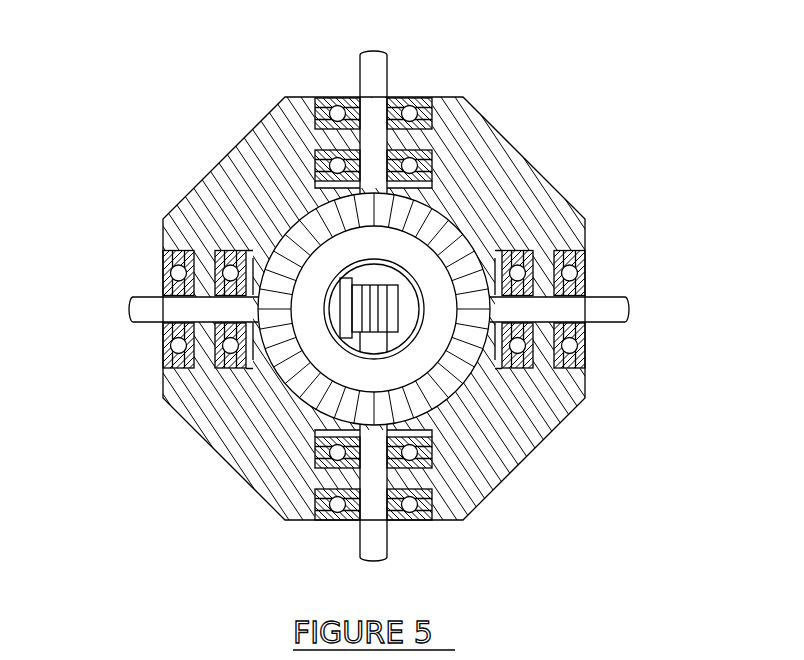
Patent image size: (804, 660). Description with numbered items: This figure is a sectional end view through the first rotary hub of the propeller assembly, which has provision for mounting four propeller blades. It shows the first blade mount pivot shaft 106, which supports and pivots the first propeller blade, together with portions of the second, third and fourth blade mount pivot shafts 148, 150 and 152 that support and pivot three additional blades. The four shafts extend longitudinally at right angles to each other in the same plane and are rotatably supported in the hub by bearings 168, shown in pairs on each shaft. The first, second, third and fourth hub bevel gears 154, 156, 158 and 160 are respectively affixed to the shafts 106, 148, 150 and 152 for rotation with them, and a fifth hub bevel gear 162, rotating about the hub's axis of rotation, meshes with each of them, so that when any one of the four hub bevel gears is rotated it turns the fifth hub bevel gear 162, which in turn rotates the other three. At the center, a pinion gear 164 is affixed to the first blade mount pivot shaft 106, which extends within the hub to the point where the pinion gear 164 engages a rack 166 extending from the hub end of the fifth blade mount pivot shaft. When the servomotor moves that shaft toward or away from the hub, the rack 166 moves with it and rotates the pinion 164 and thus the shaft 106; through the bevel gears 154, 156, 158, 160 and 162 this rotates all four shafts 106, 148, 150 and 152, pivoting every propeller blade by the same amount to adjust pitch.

The first blade mount pivot shaft 106 is at (392, 545).
The second blade mount pivot shaft 148 is at (388, 72).
The third blade mount pivot shaft 150 is at (607, 297).
The fourth blade mount pivot shaft 152 is at (150, 297).
The first hub bevel gear 154 is at (433, 452).
The second hub bevel gear 156 is at (432, 197).
The third hub bevel gear 158 is at (420, 430).
The fourth hub bevel gear 160 is at (332, 332).
The fifth hub bevel gear 162 is at (470, 240).
The pinion gear 164 is at (373, 333).
The rack 166 is at (340, 316).
The bearings 168 is at (315, 105).